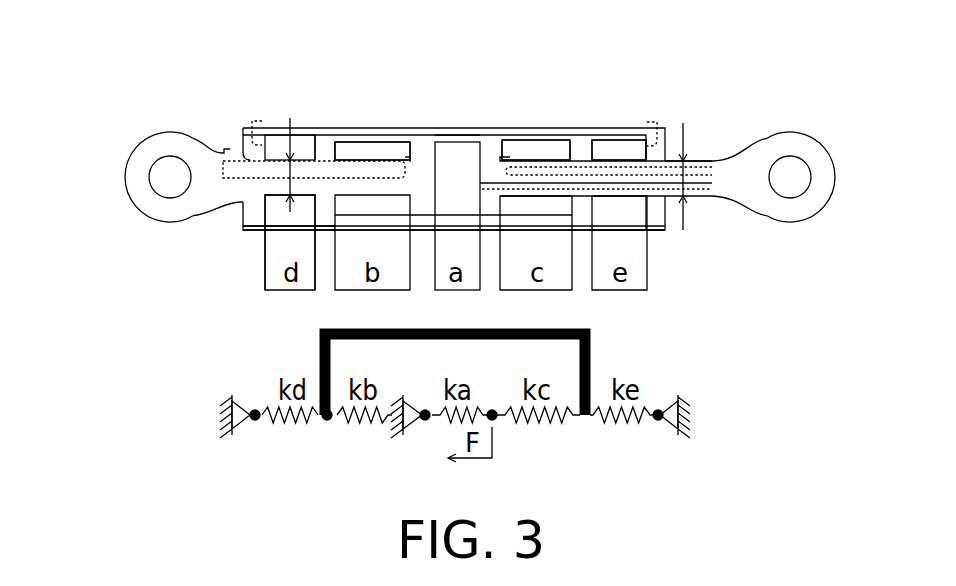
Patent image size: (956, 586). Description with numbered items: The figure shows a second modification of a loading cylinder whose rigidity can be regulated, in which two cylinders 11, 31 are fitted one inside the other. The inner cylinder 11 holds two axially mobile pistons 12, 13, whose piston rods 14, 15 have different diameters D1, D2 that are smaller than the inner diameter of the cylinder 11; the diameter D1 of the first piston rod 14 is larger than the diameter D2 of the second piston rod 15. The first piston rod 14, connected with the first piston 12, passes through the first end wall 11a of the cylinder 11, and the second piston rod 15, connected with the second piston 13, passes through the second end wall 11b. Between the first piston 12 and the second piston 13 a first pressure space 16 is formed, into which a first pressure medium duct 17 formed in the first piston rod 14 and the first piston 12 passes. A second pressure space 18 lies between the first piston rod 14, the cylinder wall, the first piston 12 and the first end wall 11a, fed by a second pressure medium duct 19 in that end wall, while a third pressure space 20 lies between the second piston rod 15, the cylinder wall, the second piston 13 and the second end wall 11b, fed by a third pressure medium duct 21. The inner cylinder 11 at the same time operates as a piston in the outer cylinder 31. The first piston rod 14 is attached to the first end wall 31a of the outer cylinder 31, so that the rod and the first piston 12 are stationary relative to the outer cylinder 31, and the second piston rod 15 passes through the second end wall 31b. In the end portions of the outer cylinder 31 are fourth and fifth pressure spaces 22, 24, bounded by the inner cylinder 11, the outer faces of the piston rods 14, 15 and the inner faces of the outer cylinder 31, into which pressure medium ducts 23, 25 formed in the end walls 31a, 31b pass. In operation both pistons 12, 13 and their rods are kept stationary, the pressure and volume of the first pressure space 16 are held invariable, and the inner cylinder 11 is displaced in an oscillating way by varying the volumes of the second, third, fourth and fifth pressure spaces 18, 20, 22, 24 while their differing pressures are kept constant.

The cylinder 11 is at (412, 140).
The first end wall 11a is at (338, 140).
The second end wall 11b is at (582, 145).
The first piston 12 is at (436, 133).
The second piston 13 is at (495, 151).
The first piston rod 14 is at (240, 203).
The second piston rod 15 is at (775, 145).
The first pressure space 16 is at (468, 172).
The first pressure medium duct 17 is at (713, 204).
The second pressure space 18 is at (373, 153).
The second pressure medium duct 19 is at (221, 142).
The third pressure space 20 is at (552, 151).
The third pressure medium duct 21 is at (722, 153).
The fourth pressure space 22 is at (303, 207).
The pressure medium duct 23 is at (253, 116).
The fifth pressure space 24 is at (627, 145).
The pressure medium duct 25 is at (657, 115).
The outer cylinder 31 is at (328, 147).
The first end wall 31a is at (250, 225).
The second end wall 31b is at (658, 218).
The diameter of first piston rod D1 is at (290, 120).
The diameter of second piston rod D2 is at (685, 138).